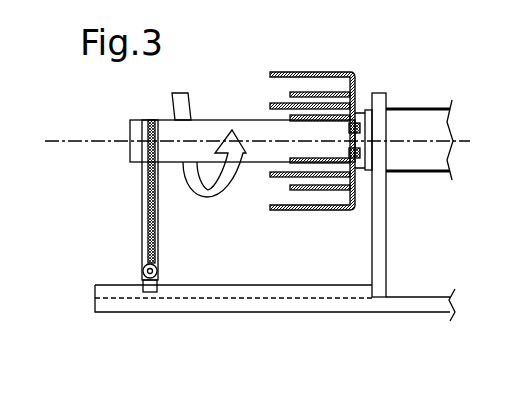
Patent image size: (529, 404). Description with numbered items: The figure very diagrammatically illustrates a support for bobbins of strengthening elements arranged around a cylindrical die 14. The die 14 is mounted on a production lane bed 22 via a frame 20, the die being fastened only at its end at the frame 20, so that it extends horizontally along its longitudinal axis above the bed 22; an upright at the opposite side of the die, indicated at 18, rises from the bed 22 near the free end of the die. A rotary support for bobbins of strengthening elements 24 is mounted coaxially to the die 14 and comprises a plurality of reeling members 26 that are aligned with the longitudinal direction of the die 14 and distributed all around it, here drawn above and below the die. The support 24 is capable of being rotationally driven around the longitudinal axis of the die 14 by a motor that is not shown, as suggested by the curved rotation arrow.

The cylindrical die 14 is at (232, 120).
The support post 18 is at (142, 213).
The frame 20 is at (388, 240).
The production lane bed 22 is at (222, 312).
The rotary support for bobbins of strengthening elements 24 is at (372, 62).
The reeling members 26 is at (310, 103).